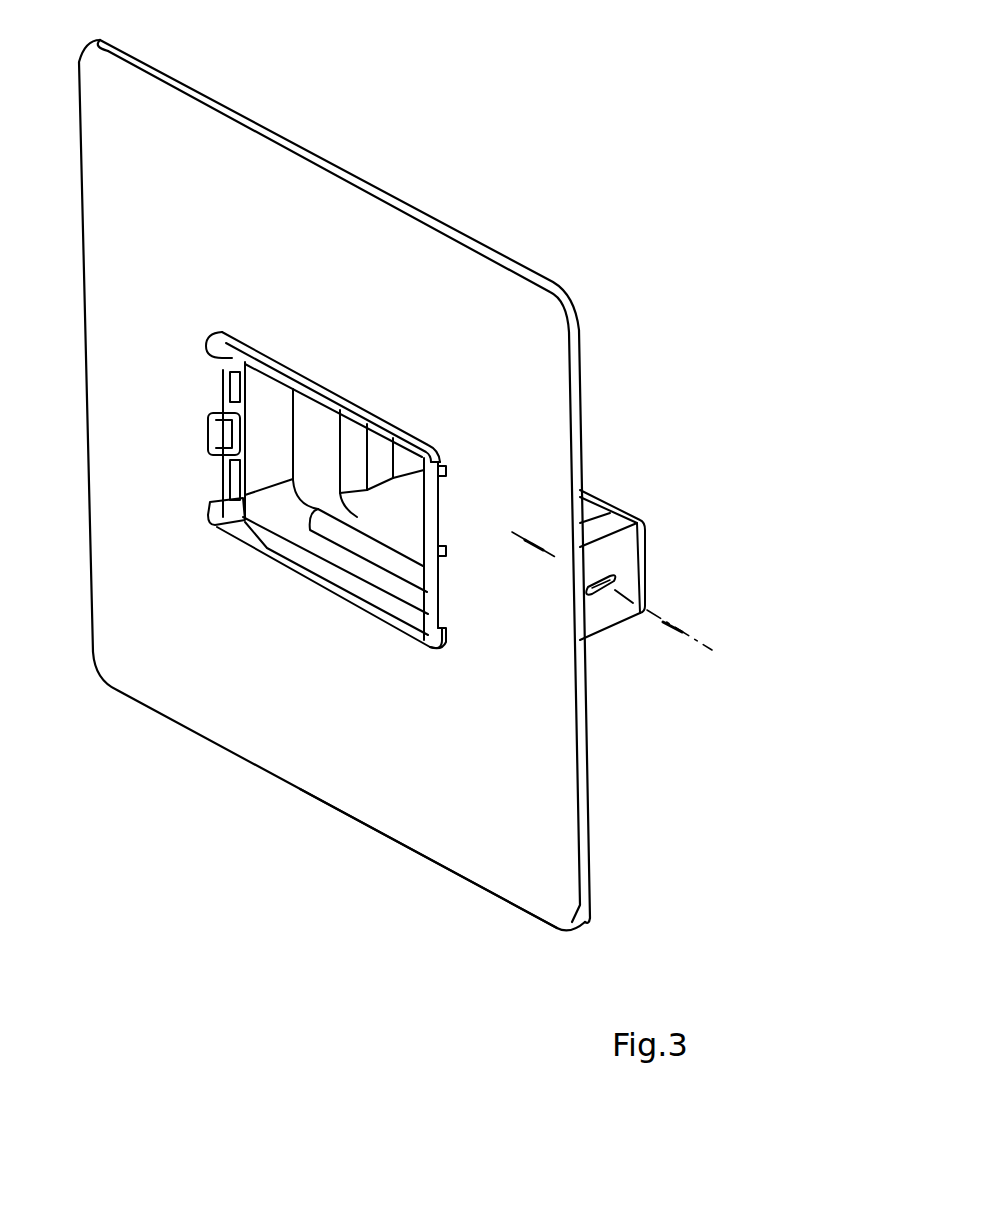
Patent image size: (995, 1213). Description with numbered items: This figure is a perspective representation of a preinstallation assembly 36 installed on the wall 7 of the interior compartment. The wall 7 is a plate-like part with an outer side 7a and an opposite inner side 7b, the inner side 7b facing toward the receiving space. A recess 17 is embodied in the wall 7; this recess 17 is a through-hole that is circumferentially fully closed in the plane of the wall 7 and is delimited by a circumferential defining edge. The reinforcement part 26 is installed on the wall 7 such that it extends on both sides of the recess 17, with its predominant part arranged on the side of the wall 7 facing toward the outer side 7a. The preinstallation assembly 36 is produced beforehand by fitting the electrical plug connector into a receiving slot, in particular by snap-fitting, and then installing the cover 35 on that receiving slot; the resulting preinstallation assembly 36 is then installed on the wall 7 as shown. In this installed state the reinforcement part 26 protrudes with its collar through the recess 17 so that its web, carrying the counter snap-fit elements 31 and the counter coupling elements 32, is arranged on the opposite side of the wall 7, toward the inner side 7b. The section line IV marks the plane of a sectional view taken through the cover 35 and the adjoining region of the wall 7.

The wall 7 is at (221, 148).
The outer side 7a is at (578, 372).
The inner side 7b is at (550, 843).
The recess 17 is at (401, 412).
The reinforcement part 26 is at (322, 372).
The counter snap-fit elements 31 is at (220, 348).
The counter coupling elements 32 is at (446, 472).
The cover 35 is at (640, 521).
The preinstallation assembly 36 is at (607, 478).
The section line IV- IV is at (533, 552).